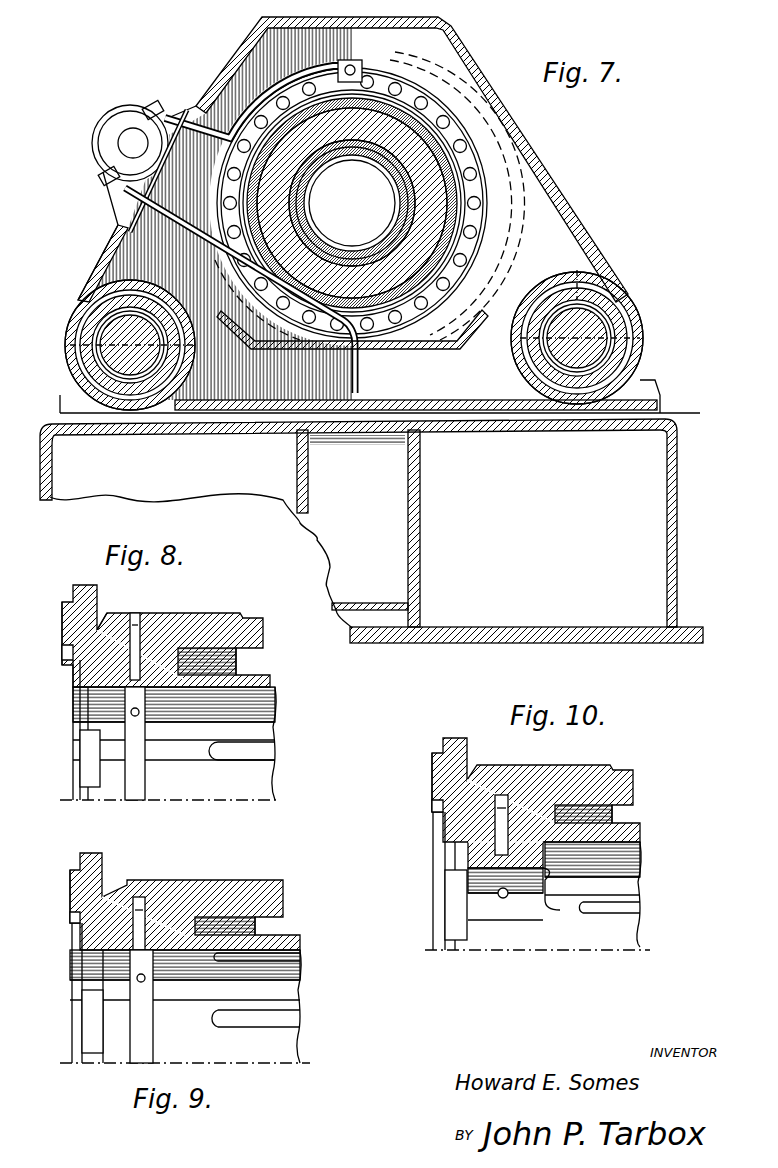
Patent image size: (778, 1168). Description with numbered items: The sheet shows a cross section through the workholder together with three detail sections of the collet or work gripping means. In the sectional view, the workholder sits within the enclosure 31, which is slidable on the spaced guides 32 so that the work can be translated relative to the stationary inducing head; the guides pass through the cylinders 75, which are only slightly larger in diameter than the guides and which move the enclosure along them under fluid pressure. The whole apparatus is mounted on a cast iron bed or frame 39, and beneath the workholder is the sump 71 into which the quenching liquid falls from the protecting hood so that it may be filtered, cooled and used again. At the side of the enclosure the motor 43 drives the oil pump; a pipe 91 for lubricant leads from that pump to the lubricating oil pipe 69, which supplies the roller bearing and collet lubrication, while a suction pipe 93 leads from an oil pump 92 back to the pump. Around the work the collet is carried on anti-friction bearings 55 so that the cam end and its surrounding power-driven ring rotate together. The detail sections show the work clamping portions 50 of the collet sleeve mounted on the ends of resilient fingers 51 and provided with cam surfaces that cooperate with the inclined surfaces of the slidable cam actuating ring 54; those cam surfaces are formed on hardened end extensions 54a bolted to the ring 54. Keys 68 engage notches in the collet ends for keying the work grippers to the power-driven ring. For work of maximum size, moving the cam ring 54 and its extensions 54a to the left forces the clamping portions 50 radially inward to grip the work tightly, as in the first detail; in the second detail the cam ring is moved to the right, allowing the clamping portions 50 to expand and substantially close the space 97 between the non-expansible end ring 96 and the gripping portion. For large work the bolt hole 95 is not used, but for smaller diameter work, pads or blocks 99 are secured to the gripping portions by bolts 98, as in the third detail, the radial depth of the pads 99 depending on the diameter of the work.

In FIG. 7, the enclosure 31 is at (536, 151).
In FIG. 7, the spaced guides 32 is at (630, 352).
In FIG. 7, the cast iron bed or frame 39 is at (472, 484).
In FIG. 7, the motor 43 is at (92, 150).
In FIG. 8, the work clamping portion 50 is at (160, 750).
In FIG. 9, the work clamping portion 50 is at (167, 1014).
In FIG. 8, the resilient fingers 51 is at (275, 770).
In FIG. 9, the resilient fingers 51 is at (300, 1035).
In FIG. 10, the resilient fingers 51 is at (640, 915).
In FIG. 8, the cam actuating ring 54 is at (250, 618).
In FIG. 9, the cam actuating ring 54 is at (278, 888).
In FIG. 10, the cam actuating ring 54 is at (625, 775).
In FIG. 8, the hardened end extensions 54a is at (208, 620).
In FIG. 9, the hardened end extensions 54a is at (220, 890).
In FIG. 10, the hardened end extensions 54a is at (575, 775).
In FIG. 7, the anti-friction bearings 55 is at (462, 255).
In FIG. 8, the keys 68 is at (82, 742).
In FIG. 7, the lubricating oil pipe 69 is at (350, 60).
In FIG. 7, the sump 71 is at (366, 501).
In FIG. 7, the cylinders 75 is at (607, 302).
In FIG. 7, the pipe for lubricant 91 is at (188, 122).
In FIG. 7, the oil pump 92 is at (360, 388).
In FIG. 7, the suction pipe 93 is at (122, 190).
In FIG. 8, the bolt hole 95 is at (133, 625).
In FIG. 9, the bolt hole 95 is at (138, 905).
In FIG. 10, the bolt hole 95 is at (500, 800).
In FIG. 8, the non-expansible end ring 96 is at (63, 620).
In FIG. 9, the non-expansible end ring 96 is at (70, 890).
In FIG. 10, the non-expansible end ring 96 is at (435, 786).
In FIG. 8, the space 97 is at (65, 650).
In FIG. 9, the space 97 is at (72, 918).
In FIG. 10, the space 97 is at (440, 815).
In FIG. 10, the bolts 98 is at (523, 800).
In FIG. 10, the pads or blocks 99 is at (550, 872).